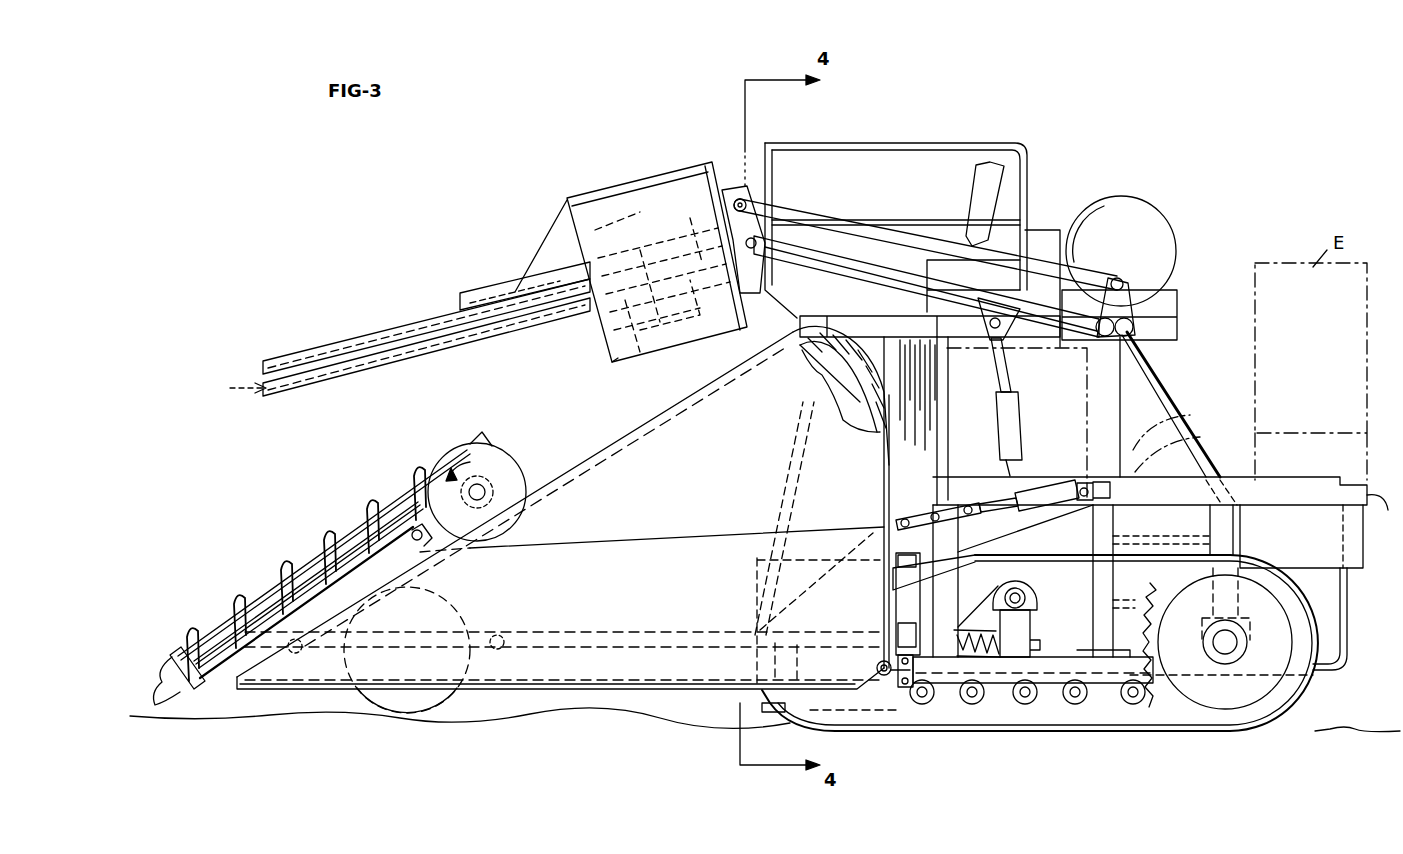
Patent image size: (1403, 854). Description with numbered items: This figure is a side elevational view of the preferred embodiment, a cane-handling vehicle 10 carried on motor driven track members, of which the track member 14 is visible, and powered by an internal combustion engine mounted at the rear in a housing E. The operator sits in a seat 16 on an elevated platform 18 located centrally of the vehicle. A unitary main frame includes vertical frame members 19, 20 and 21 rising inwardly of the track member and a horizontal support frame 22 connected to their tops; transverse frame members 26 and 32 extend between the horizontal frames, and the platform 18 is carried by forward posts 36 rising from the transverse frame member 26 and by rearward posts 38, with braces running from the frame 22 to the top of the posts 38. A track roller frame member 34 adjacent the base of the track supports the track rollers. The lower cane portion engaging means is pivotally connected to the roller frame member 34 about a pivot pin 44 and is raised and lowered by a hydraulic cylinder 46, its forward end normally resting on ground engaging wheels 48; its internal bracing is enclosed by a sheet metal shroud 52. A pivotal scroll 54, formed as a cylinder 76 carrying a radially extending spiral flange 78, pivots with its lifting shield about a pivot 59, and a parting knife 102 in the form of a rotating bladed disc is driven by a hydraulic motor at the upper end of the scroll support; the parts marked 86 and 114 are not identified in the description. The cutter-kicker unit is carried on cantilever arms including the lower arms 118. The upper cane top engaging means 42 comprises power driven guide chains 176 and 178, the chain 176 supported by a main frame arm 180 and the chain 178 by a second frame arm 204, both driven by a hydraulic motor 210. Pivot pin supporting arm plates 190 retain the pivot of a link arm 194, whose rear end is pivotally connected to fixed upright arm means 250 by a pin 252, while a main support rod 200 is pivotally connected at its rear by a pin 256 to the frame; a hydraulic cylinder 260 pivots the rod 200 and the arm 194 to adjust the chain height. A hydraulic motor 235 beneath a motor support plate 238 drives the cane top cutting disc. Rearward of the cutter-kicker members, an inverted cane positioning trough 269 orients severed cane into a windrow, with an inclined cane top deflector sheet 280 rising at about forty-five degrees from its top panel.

The vehicle 10 is at (646, 126).
The track member 14 is at (1300, 703).
The seat 16 is at (948, 230).
The elevated platform 18 is at (875, 318).
The vertical frame member 19 is at (960, 540).
The vertical frame member 20 is at (1105, 541).
The vertical frame member 21 is at (1225, 543).
The horizontal support frame 22 is at (1282, 484).
The transverse frame member 26 is at (945, 470).
The transverse frame member 32 is at (1385, 516).
The track roller frame member 34 is at (1060, 665).
The forward posts 36 is at (945, 395).
The rearward posts 38 is at (1120, 382).
The upper cane top engaging means 42 is at (228, 393).
The pivot pin 44 is at (876, 666).
The hydraulic cylinder 46 is at (1048, 490).
The ground engaging wheels 48 is at (455, 700).
The sheet metal shroud 52 is at (625, 592).
The pivotal scroll 54 is at (303, 548).
The pivot 59 is at (427, 547).
The cylinder 76 is at (280, 565).
The spiral flange 78 is at (385, 490).
The inlet scoop 86 is at (172, 660).
The parting knife 102 is at (500, 462).
The front idler support 114 is at (760, 708).
The lower arms 118 is at (893, 612).
The guide chain 176 is at (305, 388).
The guide chain 178 is at (305, 362).
The main frame arm 180 is at (498, 340).
The pivot pin supporting arm plates 190 is at (737, 198).
The pivot link arm 194 is at (790, 208).
The main support rod 200 is at (808, 252).
The second frame arm 204 is at (485, 300).
The hydraulic motor 210 is at (675, 220).
The hydraulic motor 235 is at (673, 306).
The motor support plate 238 is at (612, 358).
The fixed upright arm means 250 is at (1177, 302).
The pins 252 is at (1132, 283).
The pin 256 is at (1105, 340).
The hydraulic cylinder 260 is at (1018, 410).
The inverted cane positioning trough 269 is at (896, 503).
The cane top deflector sheet 280 is at (850, 412).